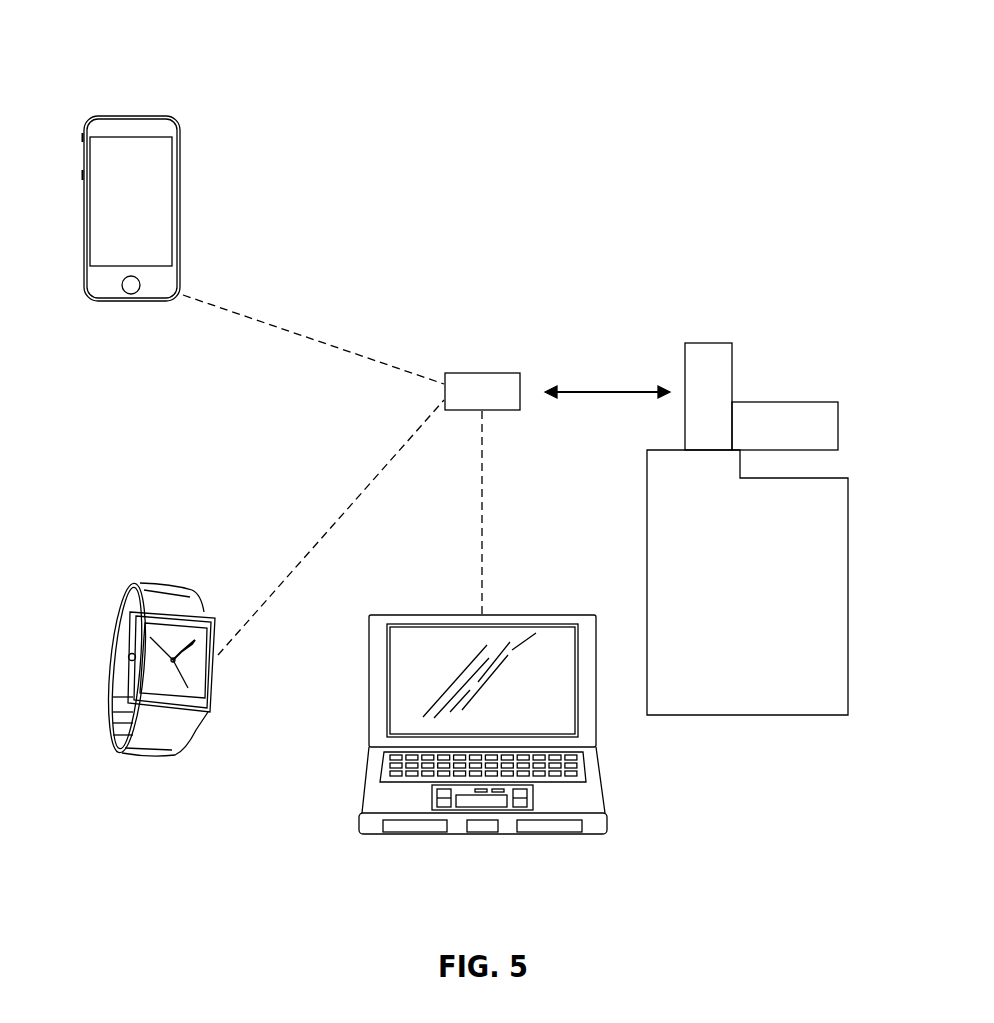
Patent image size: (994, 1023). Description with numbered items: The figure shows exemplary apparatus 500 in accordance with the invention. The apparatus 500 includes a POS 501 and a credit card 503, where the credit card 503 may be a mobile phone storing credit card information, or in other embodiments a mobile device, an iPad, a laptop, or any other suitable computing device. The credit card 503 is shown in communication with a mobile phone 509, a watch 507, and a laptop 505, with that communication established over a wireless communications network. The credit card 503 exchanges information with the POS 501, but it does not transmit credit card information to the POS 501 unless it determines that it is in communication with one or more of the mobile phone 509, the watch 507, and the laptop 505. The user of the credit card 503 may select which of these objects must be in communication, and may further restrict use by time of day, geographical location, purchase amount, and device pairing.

The apparatus 500 is at (730, 46).
The POS 501 is at (646, 540).
The credit card 503 is at (482, 372).
The laptop 505 is at (368, 680).
The watch 507 is at (113, 654).
The mobile phone 509 is at (183, 197).